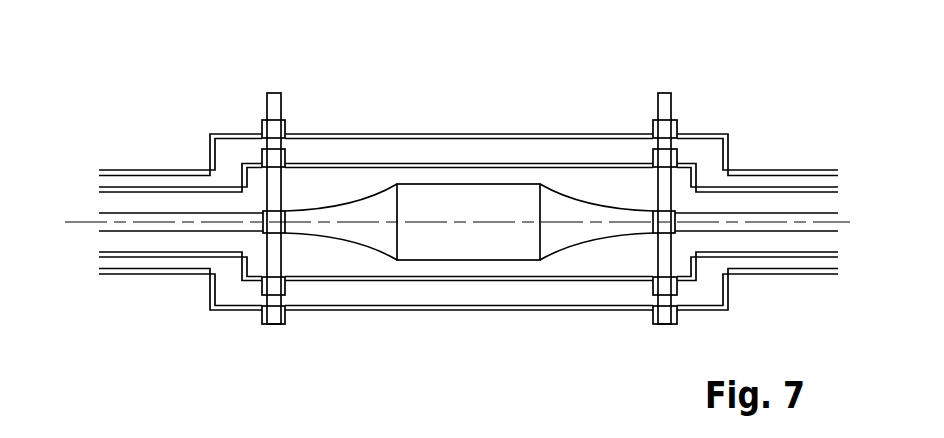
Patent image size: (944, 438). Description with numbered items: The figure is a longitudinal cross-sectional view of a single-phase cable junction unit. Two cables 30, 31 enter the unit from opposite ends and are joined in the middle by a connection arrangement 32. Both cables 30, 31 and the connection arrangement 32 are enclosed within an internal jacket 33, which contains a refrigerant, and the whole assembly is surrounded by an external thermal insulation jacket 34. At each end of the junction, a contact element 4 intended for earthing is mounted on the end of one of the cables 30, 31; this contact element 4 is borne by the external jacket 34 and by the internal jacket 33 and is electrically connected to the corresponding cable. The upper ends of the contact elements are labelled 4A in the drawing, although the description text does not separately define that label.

The contact element 4 is at (279, 192).
The fastening collars of the plate 4A is at (268, 99).
The cable 30 is at (182, 220).
The cable 31 is at (749, 226).
The connection arrangement 32 is at (446, 252).
The internal jacket 33 is at (515, 165).
The external thermal insulation jacket 34 is at (466, 137).